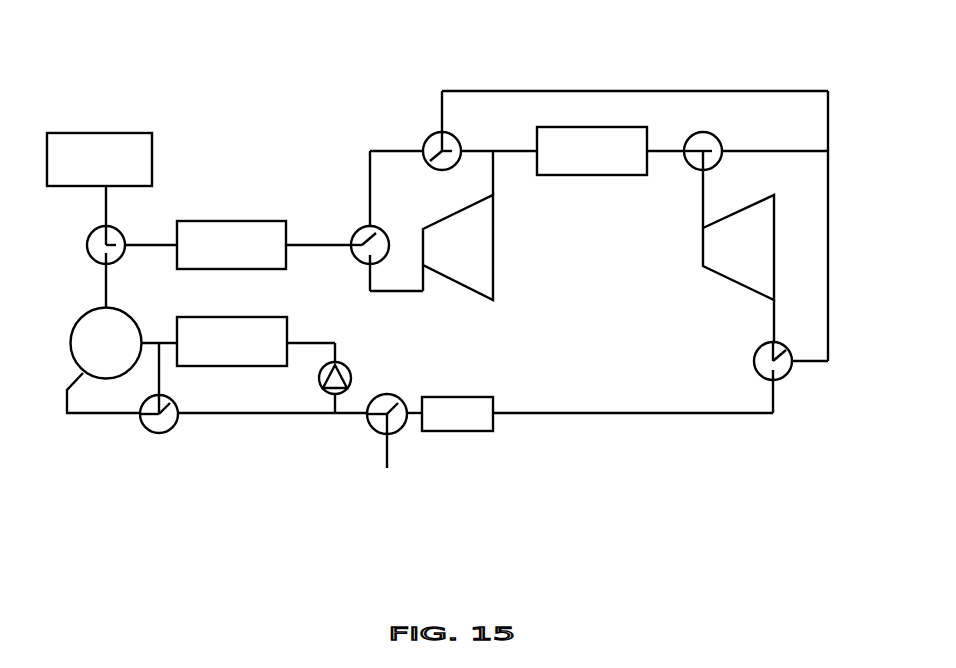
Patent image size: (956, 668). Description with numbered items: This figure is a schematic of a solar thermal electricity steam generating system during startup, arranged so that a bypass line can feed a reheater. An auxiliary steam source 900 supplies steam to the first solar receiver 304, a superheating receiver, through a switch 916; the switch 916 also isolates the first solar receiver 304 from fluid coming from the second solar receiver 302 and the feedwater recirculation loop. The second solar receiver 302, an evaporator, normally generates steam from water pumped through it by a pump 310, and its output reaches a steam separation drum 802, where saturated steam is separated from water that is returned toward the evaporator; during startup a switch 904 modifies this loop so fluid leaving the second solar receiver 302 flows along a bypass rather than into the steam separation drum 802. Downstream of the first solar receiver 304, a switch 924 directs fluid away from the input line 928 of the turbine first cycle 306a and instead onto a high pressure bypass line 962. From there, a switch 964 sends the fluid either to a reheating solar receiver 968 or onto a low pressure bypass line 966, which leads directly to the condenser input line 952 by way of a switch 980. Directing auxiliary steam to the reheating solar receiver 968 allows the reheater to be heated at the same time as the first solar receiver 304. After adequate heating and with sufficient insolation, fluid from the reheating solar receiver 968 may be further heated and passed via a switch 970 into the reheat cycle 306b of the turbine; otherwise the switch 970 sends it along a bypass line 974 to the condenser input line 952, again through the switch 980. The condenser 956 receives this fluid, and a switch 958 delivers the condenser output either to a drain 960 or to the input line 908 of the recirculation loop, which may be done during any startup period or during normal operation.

The auxiliary steam source 900 is at (99, 159).
The switch 916 is at (96, 248).
The first solar receiver 304 is at (231, 245).
The second solar receiver 302 is at (232, 341).
The steam separation drum 802 is at (106, 343).
The switch 904 is at (121, 425).
The input line of the recirculation loop 908 is at (217, 440).
The pump 310 is at (349, 362).
The switch 924 is at (322, 210).
The input line of the turbine 928 is at (436, 310).
The first cycle of the turbine 306a is at (458, 225).
The reheat cycle of the turbine 306b is at (738, 256).
The high pressure bypass line 962 is at (362, 160).
The switch 964 is at (450, 125).
The low pressure bypass line 966 is at (635, 48).
The reheating solar receiver 968 is at (592, 151).
The switch 970 is at (670, 188).
The bypass line 974 is at (775, 201).
The switch 980 is at (726, 360).
The condenser input line 952 is at (633, 376).
The condenser 956 is at (457, 414).
The switch 958 is at (352, 447).
The drain 960 is at (423, 474).